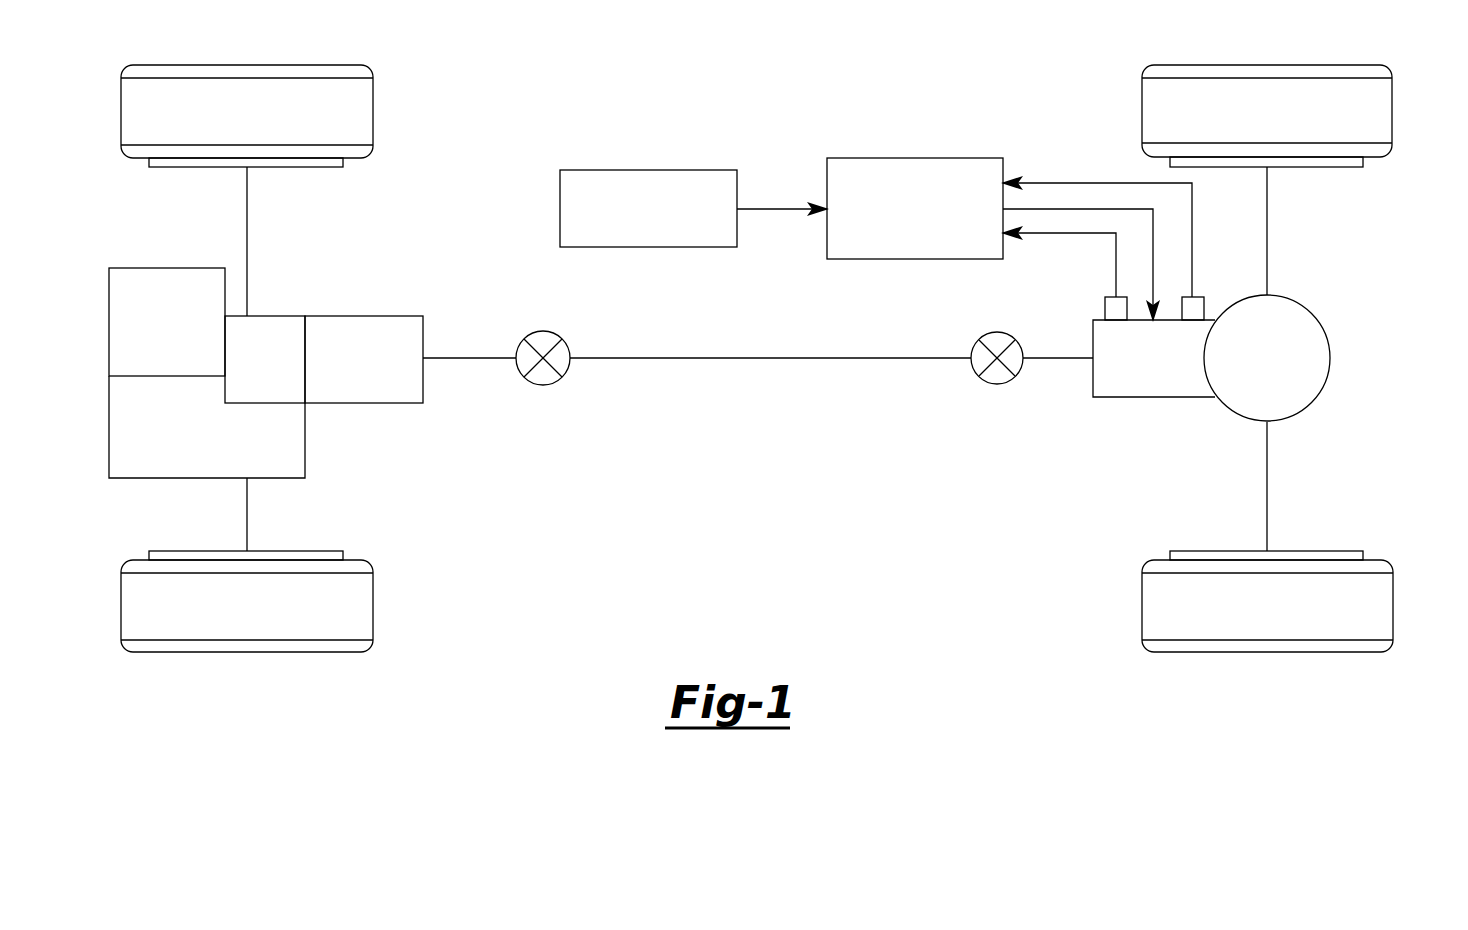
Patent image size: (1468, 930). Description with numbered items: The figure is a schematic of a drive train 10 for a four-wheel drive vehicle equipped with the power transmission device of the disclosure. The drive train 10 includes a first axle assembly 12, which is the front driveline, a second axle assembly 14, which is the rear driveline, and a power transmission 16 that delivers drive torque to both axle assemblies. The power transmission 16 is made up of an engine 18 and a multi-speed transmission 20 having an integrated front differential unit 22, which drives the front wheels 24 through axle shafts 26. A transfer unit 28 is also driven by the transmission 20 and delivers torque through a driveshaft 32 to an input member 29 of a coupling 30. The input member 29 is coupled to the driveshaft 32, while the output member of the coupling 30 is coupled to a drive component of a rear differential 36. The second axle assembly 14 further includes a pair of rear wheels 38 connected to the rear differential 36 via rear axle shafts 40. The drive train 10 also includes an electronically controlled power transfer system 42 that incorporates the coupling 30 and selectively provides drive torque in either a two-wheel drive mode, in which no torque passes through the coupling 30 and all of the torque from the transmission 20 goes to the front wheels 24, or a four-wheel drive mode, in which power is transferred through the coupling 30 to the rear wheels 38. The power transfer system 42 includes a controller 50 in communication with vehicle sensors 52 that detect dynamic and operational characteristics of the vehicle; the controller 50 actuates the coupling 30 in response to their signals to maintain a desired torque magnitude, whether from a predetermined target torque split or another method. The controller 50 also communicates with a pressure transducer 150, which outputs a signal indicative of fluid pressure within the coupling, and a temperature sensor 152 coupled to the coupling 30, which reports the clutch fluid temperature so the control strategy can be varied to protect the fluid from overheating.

The drive train 10 is at (895, 528).
The first axle assembly 12 is at (297, 247).
The second axle assembly 14 is at (1310, 258).
The power transmission 16 is at (377, 445).
The engine 18 is at (143, 340).
The multi-speed transmission 20 is at (160, 443).
The front differential unit 22 is at (246, 378).
The front wheels 24 is at (360, 102).
The axle shafts 26 is at (247, 230).
The transfer unit 28 is at (343, 378).
The input member 29 is at (1052, 360).
The coupling 30 is at (1160, 405).
The driveshaft 32 is at (677, 378).
The rear differential 36 is at (1293, 388).
The rear wheels 38 is at (1157, 108).
The rear axle shafts 40 is at (1268, 202).
The power transfer system 42 is at (803, 97).
The controller 50 is at (912, 158).
The vehicle sensors 52 is at (648, 170).
The pressure transducer 150 is at (1200, 305).
The temperature sensor 152 is at (1108, 307).